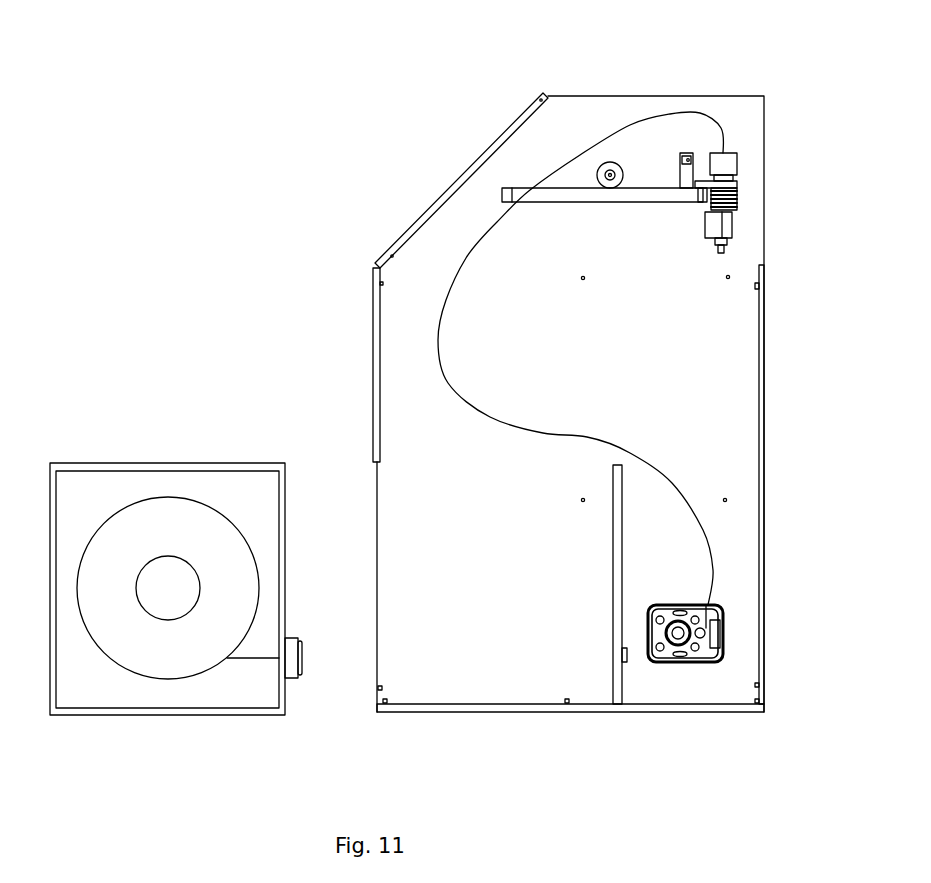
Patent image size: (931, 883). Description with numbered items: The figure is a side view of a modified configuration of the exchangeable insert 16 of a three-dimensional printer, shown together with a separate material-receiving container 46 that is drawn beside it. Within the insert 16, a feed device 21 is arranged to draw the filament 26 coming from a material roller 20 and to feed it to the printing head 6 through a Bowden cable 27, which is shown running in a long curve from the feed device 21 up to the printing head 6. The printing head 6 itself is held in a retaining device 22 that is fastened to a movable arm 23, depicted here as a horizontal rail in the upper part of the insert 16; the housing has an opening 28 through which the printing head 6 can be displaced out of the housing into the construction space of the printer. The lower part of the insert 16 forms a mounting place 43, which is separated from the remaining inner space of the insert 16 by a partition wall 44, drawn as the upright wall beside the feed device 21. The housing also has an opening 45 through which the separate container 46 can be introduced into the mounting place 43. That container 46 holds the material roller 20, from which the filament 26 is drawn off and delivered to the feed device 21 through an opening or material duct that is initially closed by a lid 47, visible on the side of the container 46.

The printing head 6 is at (725, 223).
The exchangeable insert 16 is at (413, 265).
The material roller 20 is at (182, 527).
The feed device 21 is at (706, 637).
The retaining device 22 is at (727, 195).
The arm 23 is at (582, 195).
The filament 26 is at (244, 660).
The Bowden cable 27 is at (438, 340).
The opening 28 is at (765, 143).
The mounting place 43 is at (517, 668).
The partition wall 44 is at (589, 622).
The opening 45 is at (375, 658).
The container 46 is at (105, 485).
The lid 47 is at (288, 650).